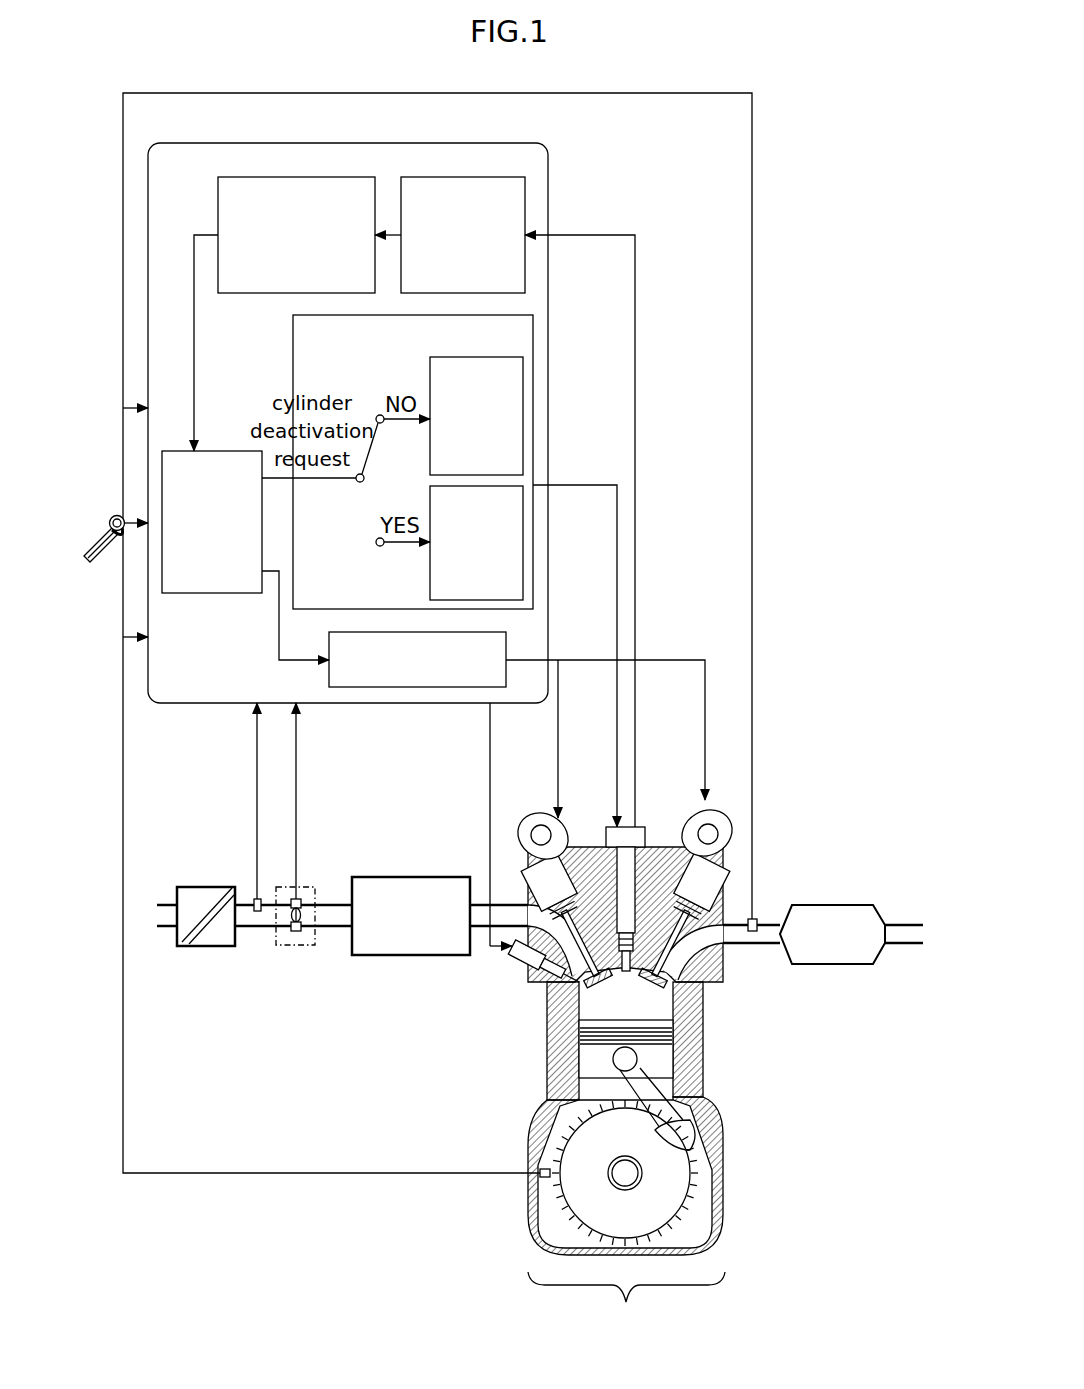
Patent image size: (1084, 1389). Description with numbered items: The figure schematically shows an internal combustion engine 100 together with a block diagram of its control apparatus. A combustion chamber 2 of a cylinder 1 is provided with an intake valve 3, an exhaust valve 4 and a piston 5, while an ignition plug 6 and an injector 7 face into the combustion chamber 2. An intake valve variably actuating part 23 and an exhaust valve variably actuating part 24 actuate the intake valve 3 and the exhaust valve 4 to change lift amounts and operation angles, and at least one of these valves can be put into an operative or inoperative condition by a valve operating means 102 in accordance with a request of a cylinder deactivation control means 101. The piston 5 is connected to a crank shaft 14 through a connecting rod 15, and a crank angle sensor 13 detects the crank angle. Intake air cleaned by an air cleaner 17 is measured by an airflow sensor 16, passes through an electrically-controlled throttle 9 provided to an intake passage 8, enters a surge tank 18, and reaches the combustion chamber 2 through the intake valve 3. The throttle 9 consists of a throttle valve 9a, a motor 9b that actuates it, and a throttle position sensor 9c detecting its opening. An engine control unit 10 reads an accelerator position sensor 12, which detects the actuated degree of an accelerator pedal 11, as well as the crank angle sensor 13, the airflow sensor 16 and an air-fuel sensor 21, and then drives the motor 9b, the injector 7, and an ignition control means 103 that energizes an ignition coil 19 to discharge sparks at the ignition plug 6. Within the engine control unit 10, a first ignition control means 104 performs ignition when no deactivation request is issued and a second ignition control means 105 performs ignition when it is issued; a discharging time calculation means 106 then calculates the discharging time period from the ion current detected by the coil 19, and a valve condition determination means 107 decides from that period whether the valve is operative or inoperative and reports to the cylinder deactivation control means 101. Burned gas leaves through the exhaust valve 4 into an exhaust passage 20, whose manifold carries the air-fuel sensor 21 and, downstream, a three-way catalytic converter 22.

The cylinder 1 is at (548, 1030).
The combustion chamber 2 is at (660, 995).
The intake valve 3 is at (595, 984).
The exhaust valve 4 is at (712, 972).
The piston 5 is at (593, 1060).
The ignition plug 6 is at (628, 975).
The injector 7 is at (522, 960).
The intake passage 8 is at (248, 930).
The electrically-controlled throttle 9 is at (302, 887).
The throttle valve 9a is at (302, 929).
The motor 9b is at (300, 918).
The throttle position sensor 9c is at (304, 900).
The engine control unit 10 is at (548, 170).
The accelerator pedal 11 is at (97, 536).
The accelerator position sensor 12 is at (116, 515).
The crank angle sensor 13 is at (540, 1182).
The crank shaft 14 is at (672, 1190).
The connecting rod 15 is at (662, 1090).
The airflow sensor 16 is at (255, 896).
The air cleaner 17 is at (205, 940).
The surge tank 18 is at (418, 877).
The ignition coil 19 is at (640, 840).
The exhaust passage 20 is at (748, 936).
The air-fuel sensor 21 is at (756, 918).
The three-way catalytic converter 22 is at (860, 914).
The intake valve variably actuating part 23 is at (563, 836).
The exhaust valve variably actuating part 24 is at (700, 815).
The internal combustion engine 100 is at (626, 1215).
The cylinder deactivation control means 101 is at (235, 595).
The valve operating means 102 is at (425, 688).
The ignition control means 103 is at (533, 325).
The first ignition control means 104 is at (523, 442).
The second ignition control means 105 is at (523, 577).
The discharging time calculation means 106 is at (492, 177).
The valve condition determination means 107 is at (340, 177).